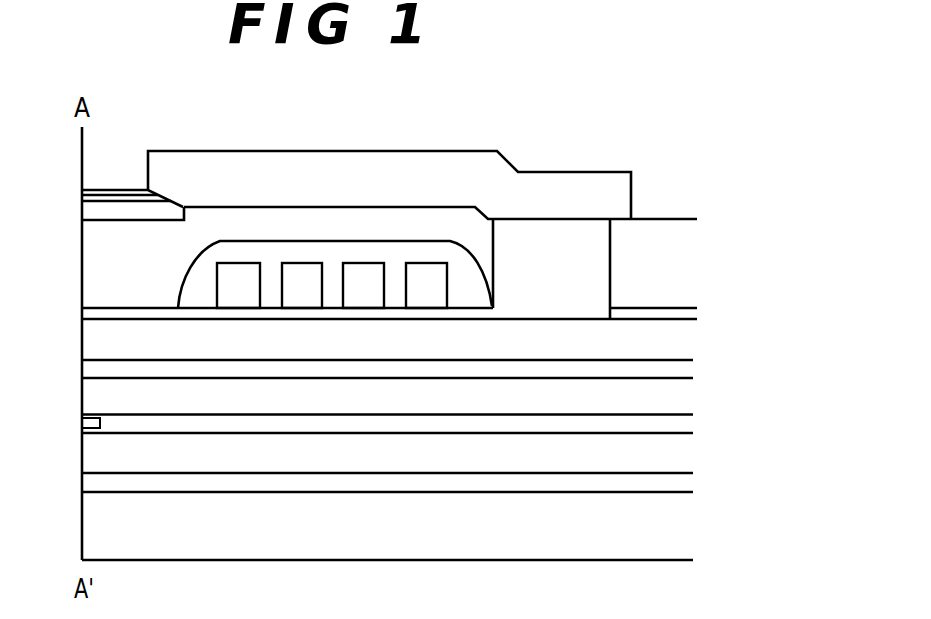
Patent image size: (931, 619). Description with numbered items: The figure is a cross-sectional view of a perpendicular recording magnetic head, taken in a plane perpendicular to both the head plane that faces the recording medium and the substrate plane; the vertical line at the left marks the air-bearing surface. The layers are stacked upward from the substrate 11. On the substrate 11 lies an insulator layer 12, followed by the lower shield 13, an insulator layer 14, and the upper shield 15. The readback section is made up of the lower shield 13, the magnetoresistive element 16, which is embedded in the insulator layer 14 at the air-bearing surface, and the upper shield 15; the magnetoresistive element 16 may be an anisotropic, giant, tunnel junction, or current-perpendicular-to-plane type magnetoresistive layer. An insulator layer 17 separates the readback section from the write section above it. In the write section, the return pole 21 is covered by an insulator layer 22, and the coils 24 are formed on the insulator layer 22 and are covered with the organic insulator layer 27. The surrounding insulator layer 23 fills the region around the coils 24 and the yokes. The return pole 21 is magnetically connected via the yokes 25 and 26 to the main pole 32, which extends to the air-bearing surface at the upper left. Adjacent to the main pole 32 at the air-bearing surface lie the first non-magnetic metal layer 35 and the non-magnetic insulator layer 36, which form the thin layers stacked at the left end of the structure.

The substrate 11 is at (647, 532).
The insulator layer 12 is at (647, 486).
The lower shield 13 is at (647, 456).
The insulator layer 14 is at (647, 429).
The upper shield 15 is at (647, 402).
The magnetoresistive element 16 is at (82, 427).
The insulator layer 17 is at (647, 374).
The return pole 21 is at (647, 345).
The insulator layer 22 is at (90, 311).
The insulator layer 23 is at (92, 267).
The coils 24 is at (225, 293).
The yoke 25 is at (577, 252).
The yoke 26 is at (600, 193).
The organic insulator layer 27 is at (462, 293).
The main pole 32 is at (92, 213).
The first non-magnetic metal layer 35 is at (92, 206).
The non-magnetic insulator layer 36 is at (90, 192).